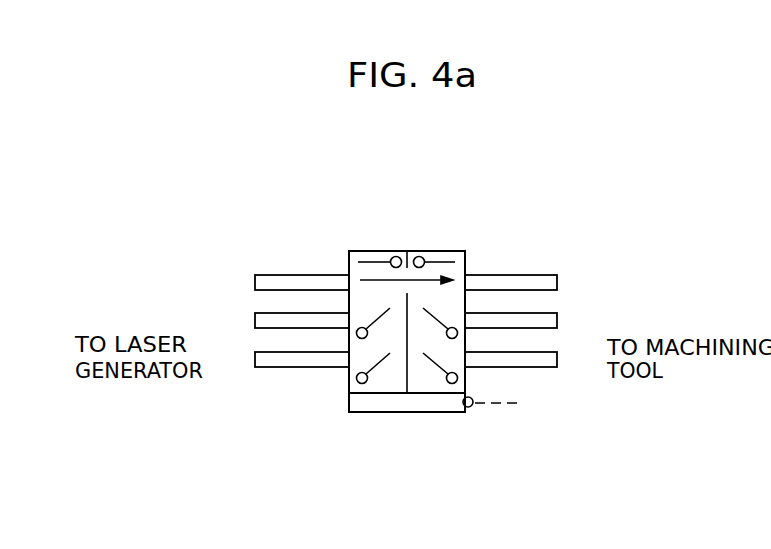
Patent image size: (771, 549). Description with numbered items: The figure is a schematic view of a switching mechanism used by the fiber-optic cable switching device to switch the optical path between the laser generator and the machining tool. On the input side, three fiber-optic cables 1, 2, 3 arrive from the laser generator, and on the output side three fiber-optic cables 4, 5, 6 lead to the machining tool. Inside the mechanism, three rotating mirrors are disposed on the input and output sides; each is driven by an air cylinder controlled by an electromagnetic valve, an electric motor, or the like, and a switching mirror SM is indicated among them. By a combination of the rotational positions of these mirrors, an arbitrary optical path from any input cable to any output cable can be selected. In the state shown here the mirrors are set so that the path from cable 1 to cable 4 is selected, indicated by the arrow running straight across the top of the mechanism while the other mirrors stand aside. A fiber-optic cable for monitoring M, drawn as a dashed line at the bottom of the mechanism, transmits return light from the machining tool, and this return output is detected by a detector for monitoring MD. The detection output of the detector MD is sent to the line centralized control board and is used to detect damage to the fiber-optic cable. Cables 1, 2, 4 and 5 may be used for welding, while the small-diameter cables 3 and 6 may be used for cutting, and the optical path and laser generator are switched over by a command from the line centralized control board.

The fiber-optic cable 1 is at (284, 280).
The fiber-optic cable 2 is at (284, 320).
The fiber-optic cable 3 is at (284, 360).
The fiber-optic cable 4 is at (525, 280).
The fiber-optic cable 5 is at (525, 320).
The fiber-optic cable 6 is at (525, 360).
The switching mirror SM is at (437, 364).
The fiber-optic cable for monitoring M is at (505, 404).
The detector for monitoring MD is at (468, 407).